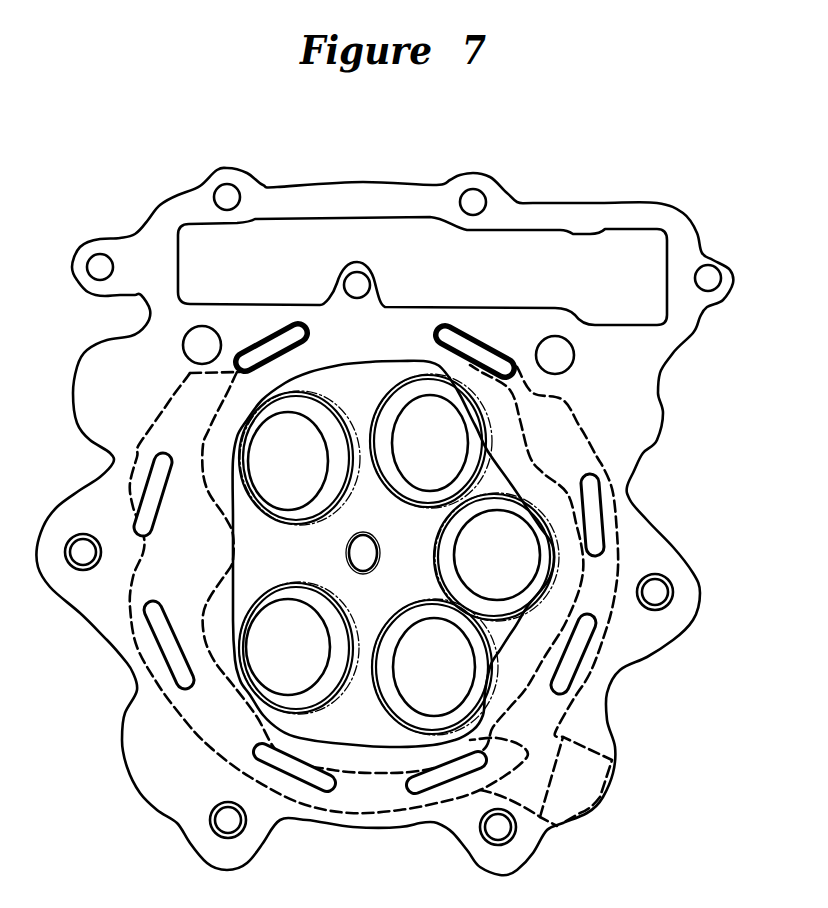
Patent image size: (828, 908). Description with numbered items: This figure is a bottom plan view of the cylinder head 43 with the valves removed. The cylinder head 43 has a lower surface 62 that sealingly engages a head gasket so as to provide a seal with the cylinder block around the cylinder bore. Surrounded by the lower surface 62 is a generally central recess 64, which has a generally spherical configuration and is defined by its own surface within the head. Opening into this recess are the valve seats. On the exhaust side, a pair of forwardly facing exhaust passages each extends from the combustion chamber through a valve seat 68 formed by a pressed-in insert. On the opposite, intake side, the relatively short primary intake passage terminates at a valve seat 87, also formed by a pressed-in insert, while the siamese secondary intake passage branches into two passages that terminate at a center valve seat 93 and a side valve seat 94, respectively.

The cylinder head 43 is at (670, 398).
The lower surface 62 is at (638, 373).
The central recess 64 is at (320, 569).
The valve seat 68 is at (266, 500).
The valve seat 87 is at (388, 704).
The center valve seat 93 is at (533, 566).
The side valve seat 94 is at (463, 437).